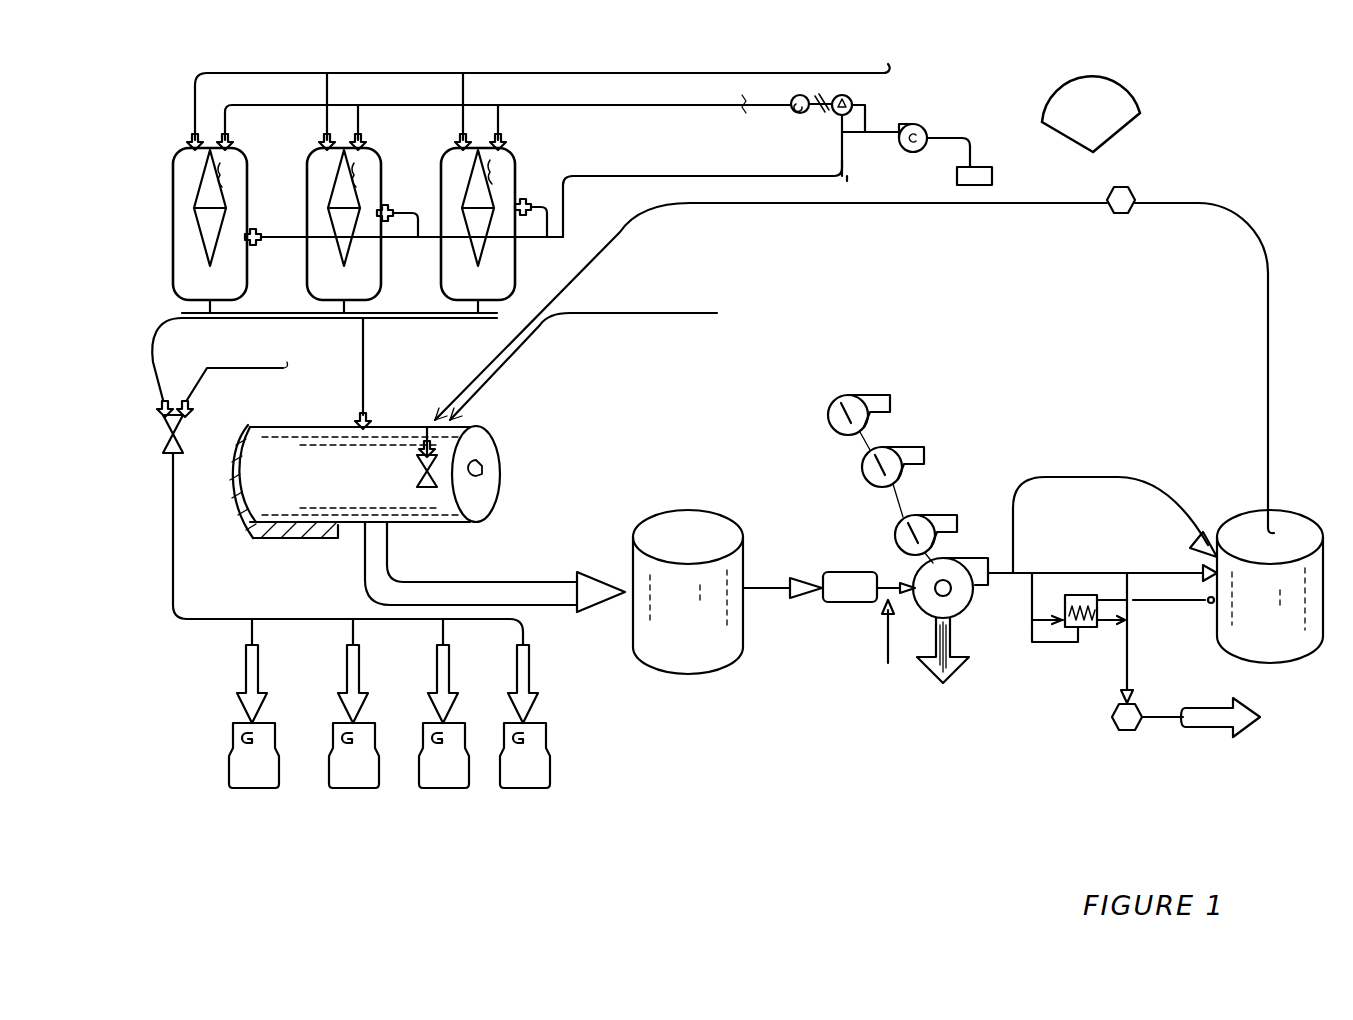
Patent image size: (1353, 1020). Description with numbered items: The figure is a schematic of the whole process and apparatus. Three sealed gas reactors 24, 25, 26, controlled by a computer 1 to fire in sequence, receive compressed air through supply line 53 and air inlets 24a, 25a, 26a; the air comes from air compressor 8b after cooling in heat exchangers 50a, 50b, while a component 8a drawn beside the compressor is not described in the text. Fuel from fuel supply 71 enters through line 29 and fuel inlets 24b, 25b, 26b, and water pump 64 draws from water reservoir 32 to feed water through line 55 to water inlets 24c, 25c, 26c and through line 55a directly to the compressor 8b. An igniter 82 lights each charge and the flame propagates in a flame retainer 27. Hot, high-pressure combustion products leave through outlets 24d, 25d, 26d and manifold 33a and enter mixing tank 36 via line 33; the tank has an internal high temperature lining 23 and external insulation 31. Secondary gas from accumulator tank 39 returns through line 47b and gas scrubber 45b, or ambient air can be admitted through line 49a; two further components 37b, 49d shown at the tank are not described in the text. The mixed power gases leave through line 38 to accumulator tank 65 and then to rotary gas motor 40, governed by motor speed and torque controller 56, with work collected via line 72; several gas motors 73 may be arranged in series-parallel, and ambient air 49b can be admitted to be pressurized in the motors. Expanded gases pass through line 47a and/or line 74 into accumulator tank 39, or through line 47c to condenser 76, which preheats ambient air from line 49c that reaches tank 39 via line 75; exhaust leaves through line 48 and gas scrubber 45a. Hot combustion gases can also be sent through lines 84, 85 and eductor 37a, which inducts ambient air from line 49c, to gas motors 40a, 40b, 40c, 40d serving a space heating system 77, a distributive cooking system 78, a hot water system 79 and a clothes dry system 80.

The computer 1 is at (1042, 124).
The valve 8a is at (792, 98).
The air compressor 8b is at (848, 98).
The internal high temperature lining 23 is at (482, 462).
The gas reactor 24 is at (246, 285).
The air inlet 24a is at (232, 136).
The fuel inlet 24b is at (193, 134).
The water inlet 24c is at (258, 230).
The outlet 24d is at (215, 305).
The gas reactor 25 is at (381, 284).
The air inlet 25a is at (366, 136).
The fuel inlet 25b is at (322, 134).
The water inlet 25c is at (392, 208).
The outlet 25d is at (350, 307).
The gas reactor 26 is at (515, 282).
The air inlet 26a is at (506, 136).
The fuel inlet 26b is at (458, 136).
The water inlet 26c is at (526, 200).
The outlet 26d is at (485, 305).
The flame retainer 27 is at (198, 268).
The line 29 is at (572, 75).
The external insulation 31 is at (275, 538).
The water reservoir 32 is at (992, 176).
The line 33 is at (368, 395).
The manifold 33a is at (428, 320).
The mixing tank 36 is at (352, 492).
The eductor 37a is at (186, 428).
The second valve 37b is at (435, 490).
The line 38 is at (380, 550).
The accumulator tank 39 is at (1290, 622).
The rotary gas motor 40 is at (975, 612).
The gas motor 40a is at (262, 722).
The gas motor 40b is at (362, 722).
The gas motor 40c is at (452, 722).
The gas motor 40d is at (533, 720).
The gas scrubber 45a is at (1115, 728).
The gas scrubber 45b is at (1115, 213).
The line 47a is at (1058, 572).
The line 47b is at (985, 208).
The line 47c is at (1040, 645).
The line 48 is at (1125, 673).
The line 49a is at (700, 313).
The ambient air 49b is at (886, 665).
The line 49c is at (1048, 610).
The supply line 49d is at (240, 368).
The heat exchanger 50a is at (745, 135).
The heat exchanger 50b is at (822, 98).
The supply line 53 is at (570, 108).
The line 55 is at (635, 176).
The line 55a is at (835, 116).
The motor speed and torque controller 56 is at (848, 572).
The water pump 64 is at (900, 152).
The accumulator tank 65 is at (704, 636).
The fuel supply 71 is at (890, 70).
The line 72 is at (955, 678).
The gas motors 73 is at (890, 397).
The line 74 is at (1095, 490).
The line 75 is at (1182, 605).
The condenser 76 is at (1100, 628).
The space heating system 77 is at (264, 772).
The distributive cooking system 78 is at (364, 772).
The hot water system 79 is at (454, 772).
The clothes dry system 80 is at (535, 772).
The igniter 82 is at (222, 200).
The line 84 is at (166, 370).
The line 85 is at (178, 565).